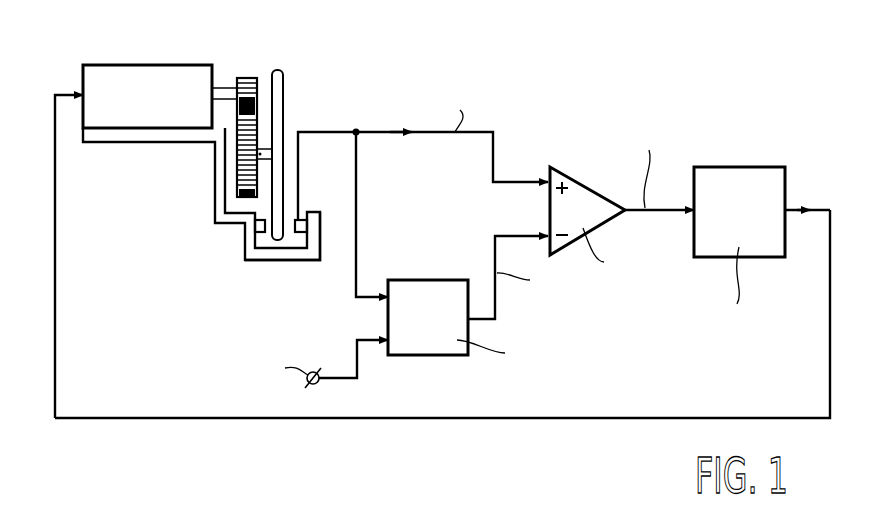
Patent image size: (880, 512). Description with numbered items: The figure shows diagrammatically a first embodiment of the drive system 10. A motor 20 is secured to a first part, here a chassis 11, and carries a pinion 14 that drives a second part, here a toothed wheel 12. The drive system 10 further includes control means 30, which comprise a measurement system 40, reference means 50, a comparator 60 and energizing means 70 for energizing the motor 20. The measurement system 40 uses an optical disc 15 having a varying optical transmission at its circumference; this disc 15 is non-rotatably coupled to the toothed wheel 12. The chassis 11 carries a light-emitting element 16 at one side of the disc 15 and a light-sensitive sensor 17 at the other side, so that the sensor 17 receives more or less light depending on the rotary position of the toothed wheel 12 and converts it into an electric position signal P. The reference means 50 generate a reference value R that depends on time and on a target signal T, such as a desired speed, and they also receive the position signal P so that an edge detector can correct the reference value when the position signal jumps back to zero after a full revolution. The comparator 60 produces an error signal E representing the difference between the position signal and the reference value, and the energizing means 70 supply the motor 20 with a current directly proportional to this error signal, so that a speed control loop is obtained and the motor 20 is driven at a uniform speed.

The drive system 10 is at (110, 46).
The motor 20 is at (142, 65).
The pinion 14 is at (248, 78).
The optical disc 15 is at (283, 80).
The toothed wheel 12 is at (256, 124).
The light-sensitive sensor 17 is at (308, 225).
The light-emitting element 16 is at (258, 231).
The chassis 11 is at (252, 254).
The measurement system 40 is at (274, 282).
The control means 30 is at (576, 80).
The reference means 50 is at (435, 279).
The comparator 60 is at (587, 181).
The energizing means 70 is at (735, 167).